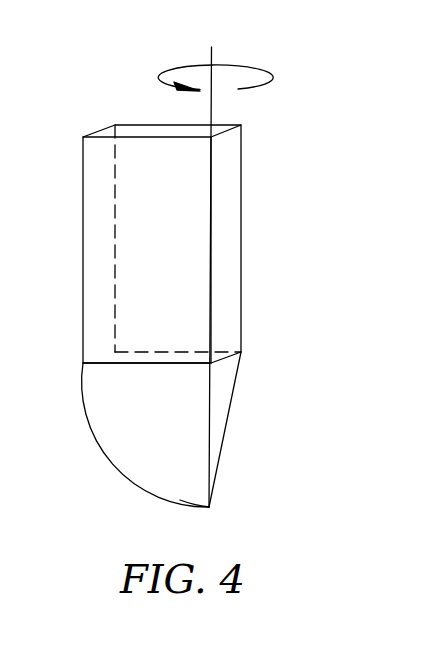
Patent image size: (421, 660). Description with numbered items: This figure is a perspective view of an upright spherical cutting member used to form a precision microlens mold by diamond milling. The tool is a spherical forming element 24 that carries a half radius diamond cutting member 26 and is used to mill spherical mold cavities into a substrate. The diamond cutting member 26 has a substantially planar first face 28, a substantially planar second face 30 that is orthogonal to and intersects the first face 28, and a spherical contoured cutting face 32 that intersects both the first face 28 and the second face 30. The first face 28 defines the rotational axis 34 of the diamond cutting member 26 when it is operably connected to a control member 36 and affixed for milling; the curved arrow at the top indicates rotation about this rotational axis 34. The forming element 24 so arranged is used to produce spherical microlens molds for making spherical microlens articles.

The spherical forming element 24 is at (121, 78).
The diamond cutting member 26 is at (94, 438).
The first face 28 is at (221, 400).
The second face 30 is at (106, 360).
The cutting face 32 is at (156, 477).
The rotational axis 34 is at (212, 118).
The control member 36 is at (123, 230).